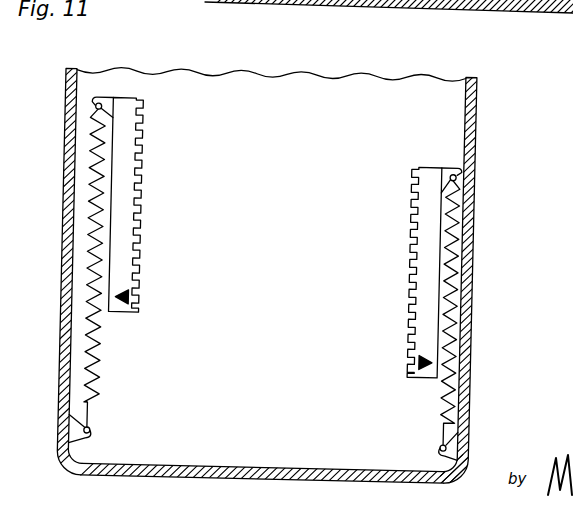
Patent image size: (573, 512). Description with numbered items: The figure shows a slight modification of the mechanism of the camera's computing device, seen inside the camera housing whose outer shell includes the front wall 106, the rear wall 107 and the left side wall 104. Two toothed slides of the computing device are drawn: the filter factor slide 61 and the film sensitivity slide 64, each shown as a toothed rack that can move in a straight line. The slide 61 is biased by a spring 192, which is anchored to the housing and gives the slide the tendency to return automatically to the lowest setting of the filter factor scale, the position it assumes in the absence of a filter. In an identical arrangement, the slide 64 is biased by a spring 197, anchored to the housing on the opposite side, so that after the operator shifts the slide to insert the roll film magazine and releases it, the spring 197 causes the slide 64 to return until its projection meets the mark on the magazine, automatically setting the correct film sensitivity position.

The slide 61 is at (126, 103).
The film sensitivity slide 64 is at (428, 171).
The left side wall 104 is at (248, 469).
The front wall 106 is at (65, 150).
The rear wall 107 is at (476, 120).
The spring 192 is at (103, 363).
The spring 197 is at (441, 401).